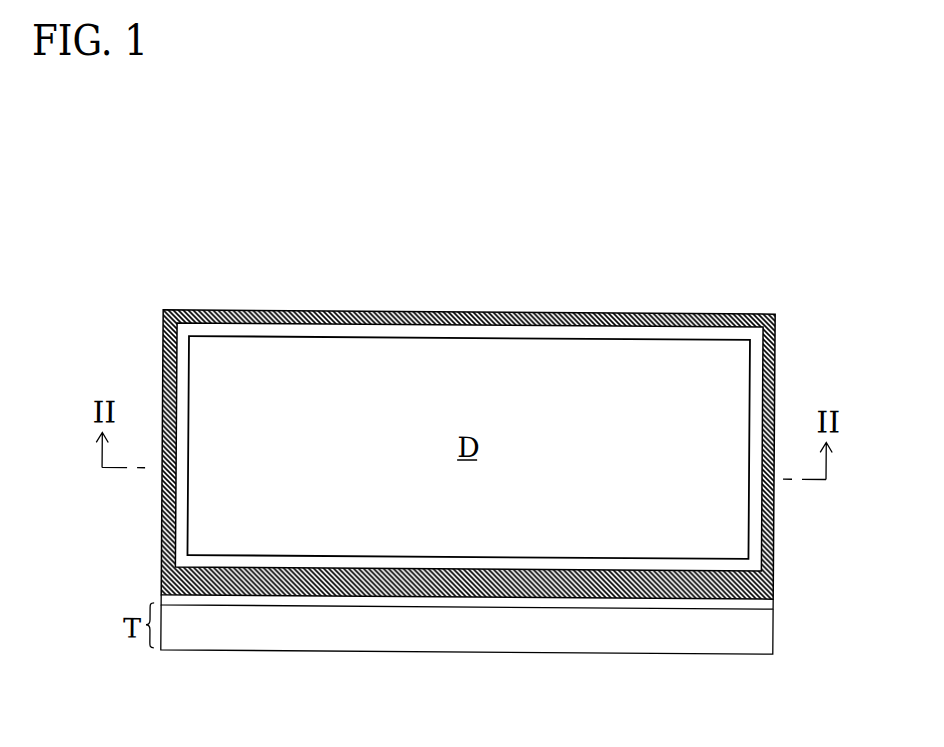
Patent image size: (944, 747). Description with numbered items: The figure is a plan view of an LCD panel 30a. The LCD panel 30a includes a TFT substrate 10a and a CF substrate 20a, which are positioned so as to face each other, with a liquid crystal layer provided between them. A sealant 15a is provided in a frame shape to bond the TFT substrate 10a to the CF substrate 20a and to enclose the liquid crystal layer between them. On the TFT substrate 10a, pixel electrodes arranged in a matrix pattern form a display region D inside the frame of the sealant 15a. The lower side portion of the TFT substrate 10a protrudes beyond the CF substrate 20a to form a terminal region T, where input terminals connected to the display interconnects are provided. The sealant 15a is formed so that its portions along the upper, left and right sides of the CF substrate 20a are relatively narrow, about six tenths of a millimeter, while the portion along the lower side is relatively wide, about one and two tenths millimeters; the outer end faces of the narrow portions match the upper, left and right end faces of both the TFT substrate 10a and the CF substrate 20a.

The LCD panel 30a is at (200, 232).
The sealant 15a is at (773, 531).
The CF substrate 20a is at (765, 603).
The TFT substrate 10a is at (765, 640).